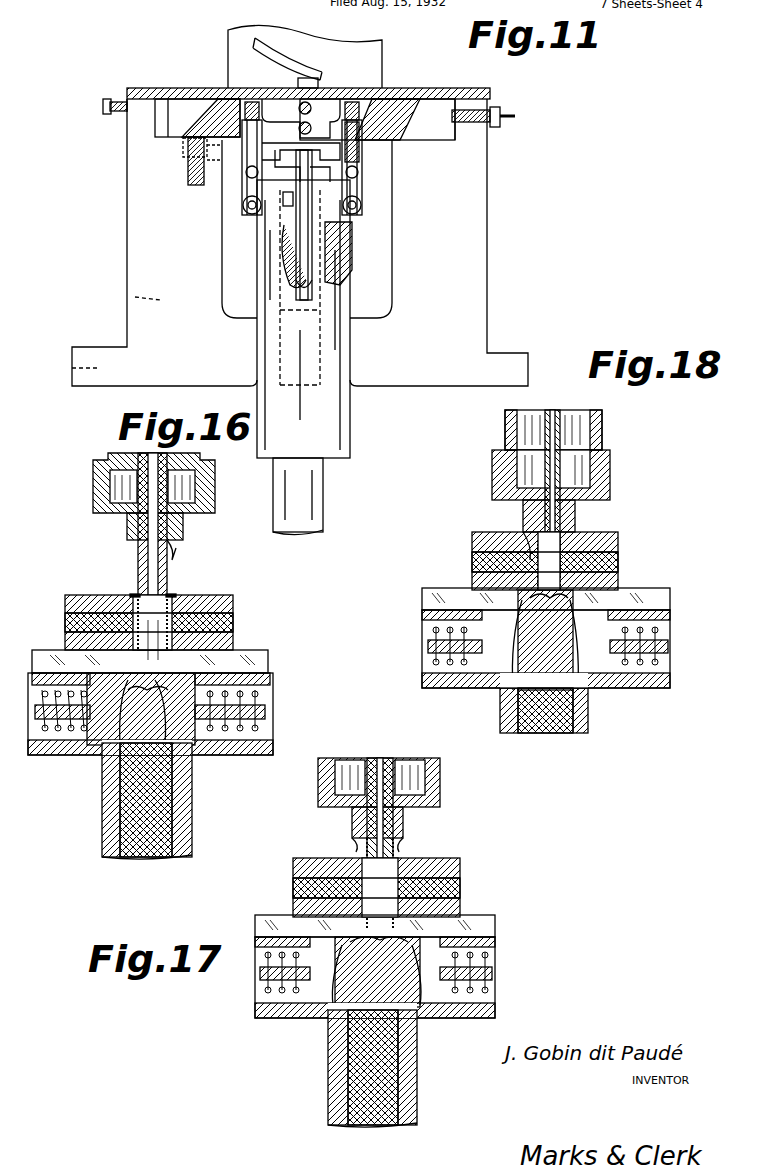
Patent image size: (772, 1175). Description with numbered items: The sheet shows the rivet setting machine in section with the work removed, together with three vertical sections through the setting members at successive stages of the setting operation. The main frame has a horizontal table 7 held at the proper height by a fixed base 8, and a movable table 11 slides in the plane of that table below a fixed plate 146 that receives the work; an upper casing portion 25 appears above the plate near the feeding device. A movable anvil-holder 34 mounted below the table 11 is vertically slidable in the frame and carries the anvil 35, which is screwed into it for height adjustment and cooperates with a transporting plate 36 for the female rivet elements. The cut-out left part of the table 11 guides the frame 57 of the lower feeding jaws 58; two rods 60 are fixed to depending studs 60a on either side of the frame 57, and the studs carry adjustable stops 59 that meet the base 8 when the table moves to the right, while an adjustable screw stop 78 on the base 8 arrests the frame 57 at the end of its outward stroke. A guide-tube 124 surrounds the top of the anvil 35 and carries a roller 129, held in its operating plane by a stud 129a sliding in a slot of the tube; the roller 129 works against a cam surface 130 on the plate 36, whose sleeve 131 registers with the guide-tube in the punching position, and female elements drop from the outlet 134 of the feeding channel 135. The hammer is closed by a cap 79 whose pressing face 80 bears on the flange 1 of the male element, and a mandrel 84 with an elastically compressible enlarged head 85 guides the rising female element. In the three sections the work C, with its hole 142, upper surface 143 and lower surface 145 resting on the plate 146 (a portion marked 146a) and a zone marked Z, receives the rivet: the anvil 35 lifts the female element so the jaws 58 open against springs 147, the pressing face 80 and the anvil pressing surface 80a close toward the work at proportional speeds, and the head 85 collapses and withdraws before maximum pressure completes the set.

In FIG. 11, the horizontal table 7 is at (178, 128).
In FIG. 11, the fixed base 8 is at (140, 238).
In FIG. 11, the movable table 11 is at (200, 150).
In FIG. 11, the upper casing 25 is at (330, 42).
In FIG. 11, the anvil-holder 34 is at (298, 495).
In FIG. 16, the anvil 35 is at (140, 805).
In FIG. 18, the anvil 35 is at (544, 710).
In FIG. 17, the anvil 35 is at (365, 1050).
In FIG. 11, the transporting plate 36 is at (340, 165).
In FIG. 11, the frame of lower feeding jaws 57 is at (362, 95).
In FIG. 16, the frame of lower feeding jaws 57 is at (250, 750).
In FIG. 18, the frame of lower feeding jaws 57 is at (648, 682).
In FIG. 17, the frame of lower feeding jaws 57 is at (470, 1015).
In FIG. 16, the lower feeding jaws 58 is at (195, 740).
In FIG. 18, the lower feeding jaws 58 is at (600, 660).
In FIG. 17, the lower feeding jaws 58 is at (430, 985).
In FIG. 11, the adjustable stops 59 is at (245, 210).
In FIG. 11, the rods 60 is at (245, 168).
In FIG. 11, the depending studs 60a is at (430, 156).
In FIG. 11, the adjustable screw stop 78 is at (299, 110).
In FIG. 16, the cap 79 is at (130, 520).
In FIG. 18, the cap 79 is at (610, 498).
In FIG. 17, the cap 79 is at (440, 806).
In FIG. 16, the pressing face 80 is at (172, 550).
In FIG. 18, the pressing face 80 is at (525, 545).
In FIG. 17, the pressing face 80 is at (352, 845).
In FIG. 16, the pressing surface of anvil 80a is at (122, 700).
In FIG. 18, the pressing surface of anvil 80a is at (548, 600).
In FIG. 17, the pressing surface of anvil 80a is at (371, 927).
In FIG. 16, the mandrel 84 is at (150, 554).
In FIG. 18, the mandrel 84 is at (552, 472).
In FIG. 17, the mandrel 84 is at (377, 800).
In FIG. 16, the enlarged head 85 is at (180, 640).
In FIG. 18, the enlarged head 85 is at (565, 548).
In FIG. 11, the guide-tube 124 is at (352, 230).
In FIG. 11, the roller 129 is at (280, 205).
In FIG. 11, the stud 129a is at (310, 262).
In FIG. 11, the cam surface 130 is at (245, 178).
In FIG. 11, the sleeve 131 is at (362, 178).
In FIG. 11, the outlet 134 is at (298, 84).
In FIG. 11, the channel 135 is at (285, 60).
In FIG. 16, the hole in work 142 is at (135, 620).
In FIG. 17, the hole in work 142 is at (396, 870).
In FIG. 17, the upper surface of work 143 is at (455, 862).
In FIG. 16, the lower surface of work 145 is at (235, 662).
In FIG. 17, the lower surface of work 145 is at (445, 925).
In FIG. 11, the fixed plate 146 is at (135, 103).
In FIG. 11, the plate 146a is at (320, 105).
In FIG. 16, the plate 146a is at (42, 662).
In FIG. 18, the plate 146a is at (660, 598).
In FIG. 17, the plate 146a is at (275, 925).
In FIG. 16, the springs 147 is at (50, 720).
In FIG. 18, the springs 147 is at (433, 662).
In FIG. 17, the springs 147 is at (265, 990).
In FIG. 16, the work C is at (156, 622).
In FIG. 18, the work C is at (554, 561).
In FIG. 17, the work C is at (384, 887).
In FIG. 16, the zone Z is at (142, 663).
In FIG. 17, the flange of male element 1 is at (398, 850).